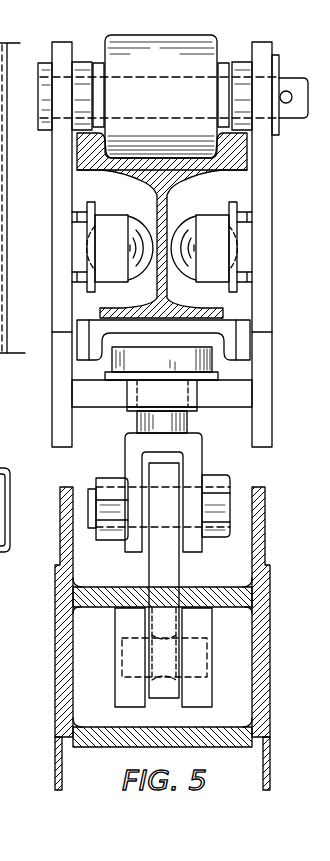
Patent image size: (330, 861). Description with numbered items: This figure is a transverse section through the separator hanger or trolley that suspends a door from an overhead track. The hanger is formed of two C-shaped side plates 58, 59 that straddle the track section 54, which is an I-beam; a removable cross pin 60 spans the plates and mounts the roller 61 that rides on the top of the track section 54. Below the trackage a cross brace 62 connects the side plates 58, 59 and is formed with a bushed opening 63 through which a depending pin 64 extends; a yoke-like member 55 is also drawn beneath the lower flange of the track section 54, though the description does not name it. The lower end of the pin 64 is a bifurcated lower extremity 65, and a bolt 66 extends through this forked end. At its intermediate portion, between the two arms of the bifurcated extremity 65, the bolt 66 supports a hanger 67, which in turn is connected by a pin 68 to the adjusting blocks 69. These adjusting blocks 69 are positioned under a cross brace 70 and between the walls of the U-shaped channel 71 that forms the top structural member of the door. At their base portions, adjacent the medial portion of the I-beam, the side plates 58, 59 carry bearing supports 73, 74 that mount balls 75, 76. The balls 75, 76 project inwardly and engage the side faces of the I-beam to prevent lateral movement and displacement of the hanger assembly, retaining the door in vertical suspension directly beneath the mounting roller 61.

The track section 54 is at (247, 167).
The yoke 55 is at (230, 333).
The C-shaped side plate 58 is at (50, 245).
The C-shaped side plate 59 is at (272, 267).
The removable cross pin 60 is at (293, 88).
The roller 61 is at (197, 62).
The cross brace 62 is at (233, 398).
The bushed opening 63 is at (137, 407).
The depending pin 64 is at (212, 362).
The bifurcated lower extremity 65 is at (202, 465).
The bolt 66 is at (110, 497).
The hanger 67 is at (178, 568).
The pin 68 is at (200, 660).
The adjusting blocks 69 is at (128, 692).
The cross brace 70 is at (70, 608).
The U-shaped channel 71 is at (270, 705).
The bearing support 73 is at (90, 243).
The bearing support 74 is at (245, 223).
The ball 75 is at (135, 265).
The ball 76 is at (188, 252).